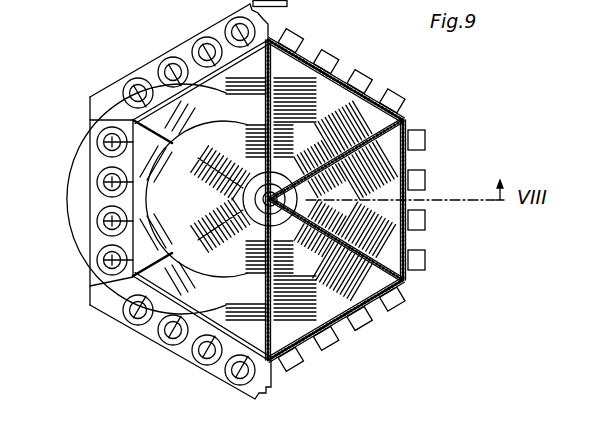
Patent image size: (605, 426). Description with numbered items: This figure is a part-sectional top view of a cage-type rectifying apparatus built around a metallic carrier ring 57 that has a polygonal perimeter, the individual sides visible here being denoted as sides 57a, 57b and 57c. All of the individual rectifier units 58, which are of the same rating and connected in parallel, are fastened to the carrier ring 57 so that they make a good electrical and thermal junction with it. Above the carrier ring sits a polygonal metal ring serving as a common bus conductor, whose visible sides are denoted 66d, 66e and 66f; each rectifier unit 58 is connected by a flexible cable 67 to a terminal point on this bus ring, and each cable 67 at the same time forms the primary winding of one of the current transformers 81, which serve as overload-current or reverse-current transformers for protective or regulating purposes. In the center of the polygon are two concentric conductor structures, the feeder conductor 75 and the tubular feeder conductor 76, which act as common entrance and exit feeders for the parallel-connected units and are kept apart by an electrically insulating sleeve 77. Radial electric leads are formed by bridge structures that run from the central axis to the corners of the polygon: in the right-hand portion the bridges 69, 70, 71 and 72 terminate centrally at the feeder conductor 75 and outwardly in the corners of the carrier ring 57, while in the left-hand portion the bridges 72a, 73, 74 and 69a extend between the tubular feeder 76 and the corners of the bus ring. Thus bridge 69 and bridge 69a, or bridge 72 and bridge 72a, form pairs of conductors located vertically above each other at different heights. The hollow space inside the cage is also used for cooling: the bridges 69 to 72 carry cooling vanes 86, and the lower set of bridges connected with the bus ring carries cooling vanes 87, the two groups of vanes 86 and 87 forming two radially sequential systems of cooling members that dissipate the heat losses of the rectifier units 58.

The carrier ring 57 is at (383, 209).
The side of carrier ring 57a is at (368, 96).
The side of carrier ring 57b is at (410, 157).
The side of carrier ring 57c is at (313, 347).
The rectifier unit 58 is at (300, 204).
The side of metal bus ring 66d is at (137, 332).
The side of metal bus ring 66e is at (132, 162).
The side of metal bus ring 66f is at (186, 44).
The flexible cable 67 is at (175, 203).
The bridge structure 69 is at (303, 45).
The bridge structure 69a is at (213, 43).
The bridge structure 70 is at (409, 131).
The bridge structure 71 is at (407, 281).
The bridge structure 72 is at (297, 368).
The bridge structure 72a is at (228, 374).
The bridge structure 73 is at (133, 277).
The bridge structure 74 is at (92, 119).
The feeder conductor 75 is at (243, 197).
The tubular feeder conductor 76 is at (258, 212).
The insulating sleeve 77 is at (236, 262).
The current transformer 81 is at (157, 66).
The cooling vanes 86 is at (401, 118).
The cooling vanes 87 is at (320, 155).